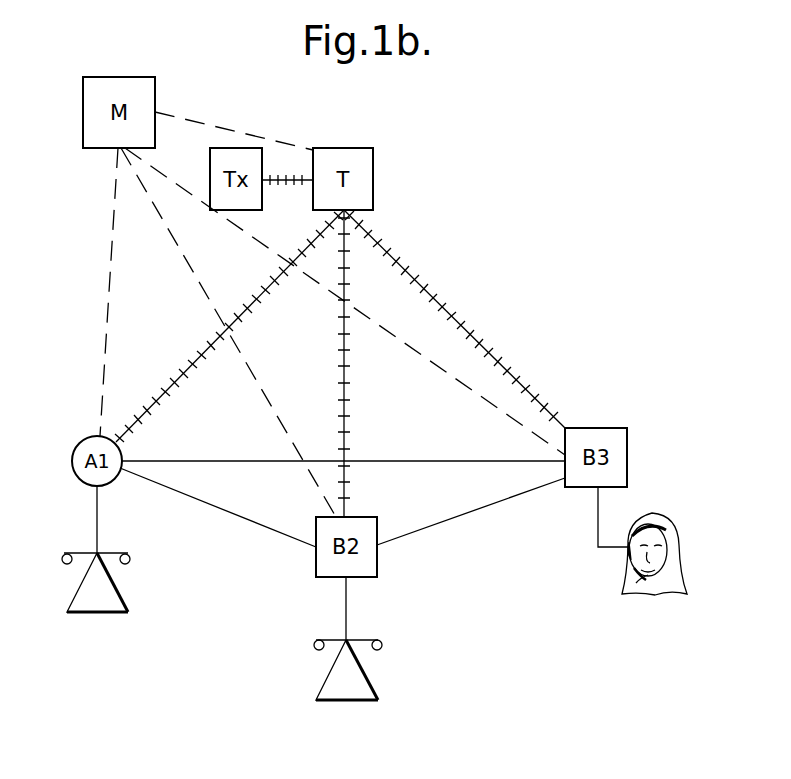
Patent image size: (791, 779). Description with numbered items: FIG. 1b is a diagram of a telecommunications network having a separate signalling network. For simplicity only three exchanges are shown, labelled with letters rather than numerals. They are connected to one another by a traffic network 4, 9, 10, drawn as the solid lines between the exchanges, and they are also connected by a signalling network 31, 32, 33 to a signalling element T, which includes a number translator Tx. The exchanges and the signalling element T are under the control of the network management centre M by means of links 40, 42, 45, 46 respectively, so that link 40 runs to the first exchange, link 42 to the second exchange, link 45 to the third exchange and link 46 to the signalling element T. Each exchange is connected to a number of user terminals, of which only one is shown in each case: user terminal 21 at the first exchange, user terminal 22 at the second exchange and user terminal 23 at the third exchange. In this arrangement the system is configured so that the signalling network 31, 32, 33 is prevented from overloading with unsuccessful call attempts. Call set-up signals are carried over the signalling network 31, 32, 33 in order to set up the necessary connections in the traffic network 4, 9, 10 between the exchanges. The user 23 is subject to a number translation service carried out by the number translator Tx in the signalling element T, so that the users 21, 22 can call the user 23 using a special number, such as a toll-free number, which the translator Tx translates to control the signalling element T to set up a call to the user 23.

The link 46 is at (210, 123).
The link 40 is at (103, 328).
The link 42 is at (262, 395).
The link 45 is at (425, 362).
The signalling network 31 is at (345, 437).
The signalling network 32 is at (173, 387).
The signalling network 33 is at (453, 317).
The traffic network 4 is at (418, 460).
The traffic network 10 is at (174, 488).
The traffic network 9 is at (458, 512).
The user terminal 21 is at (118, 614).
The user terminal 22 is at (366, 664).
The user terminal 23 is at (683, 557).